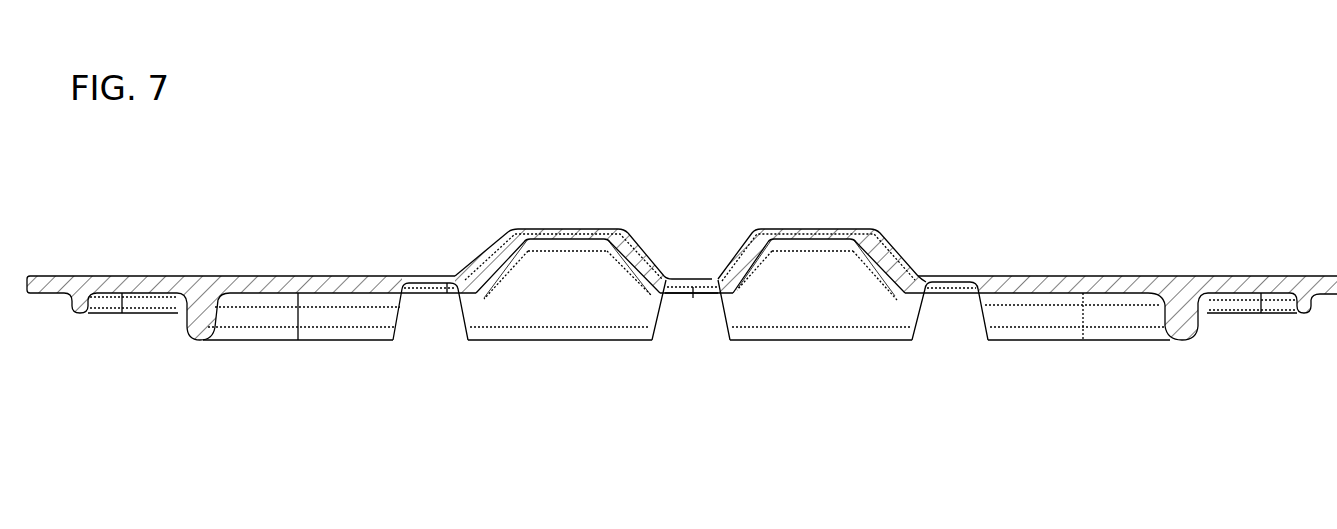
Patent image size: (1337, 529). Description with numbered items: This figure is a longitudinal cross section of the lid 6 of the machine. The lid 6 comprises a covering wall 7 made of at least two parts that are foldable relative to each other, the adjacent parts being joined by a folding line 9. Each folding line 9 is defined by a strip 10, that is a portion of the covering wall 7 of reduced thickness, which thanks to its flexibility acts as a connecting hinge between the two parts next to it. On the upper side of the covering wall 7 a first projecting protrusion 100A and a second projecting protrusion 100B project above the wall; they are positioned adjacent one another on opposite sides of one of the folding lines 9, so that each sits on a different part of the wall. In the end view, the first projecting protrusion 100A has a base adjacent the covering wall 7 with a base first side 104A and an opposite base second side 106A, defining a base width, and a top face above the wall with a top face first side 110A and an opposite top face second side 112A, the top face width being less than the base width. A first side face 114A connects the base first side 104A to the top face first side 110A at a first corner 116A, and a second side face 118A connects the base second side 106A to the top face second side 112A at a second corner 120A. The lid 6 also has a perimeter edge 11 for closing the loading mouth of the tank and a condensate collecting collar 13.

The lid 6 is at (682, 254).
The covering wall 7 is at (682, 303).
The folding line 9 is at (425, 282).
The strip 10 is at (423, 290).
The perimeter edge 11 is at (82, 313).
The condensate collecting collar 13 is at (200, 332).
The first projecting protrusion 100A is at (591, 254).
The second projecting protrusion 100B is at (800, 220).
The base first side 104A is at (465, 275).
The base second side 106A is at (667, 293).
The top face first side 110A is at (512, 230).
The top face second side 112A is at (623, 230).
The first side face 114A is at (493, 250).
The first corner 116A is at (524, 200).
The second side face 118A is at (650, 256).
The second corner 120A is at (627, 205).